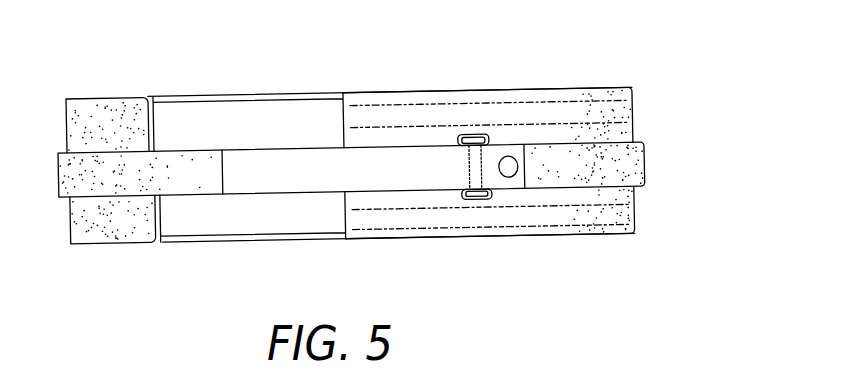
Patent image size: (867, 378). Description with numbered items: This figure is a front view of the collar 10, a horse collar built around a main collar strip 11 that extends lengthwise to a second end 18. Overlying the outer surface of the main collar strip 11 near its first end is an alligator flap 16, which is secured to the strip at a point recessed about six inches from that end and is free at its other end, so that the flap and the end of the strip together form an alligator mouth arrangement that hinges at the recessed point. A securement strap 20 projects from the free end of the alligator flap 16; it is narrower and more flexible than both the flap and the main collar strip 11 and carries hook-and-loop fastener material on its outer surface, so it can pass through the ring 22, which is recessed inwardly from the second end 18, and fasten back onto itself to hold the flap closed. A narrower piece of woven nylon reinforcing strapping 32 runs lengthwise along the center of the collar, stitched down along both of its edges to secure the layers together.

The collar 10 is at (443, 73).
The main collar strip 11 is at (585, 88).
The alligator flap 16 is at (106, 123).
The second end 18 is at (267, 125).
The securement strap 20 is at (287, 178).
The ring 22 is at (483, 193).
The woven nylon reinforcing strapping 32 is at (643, 167).